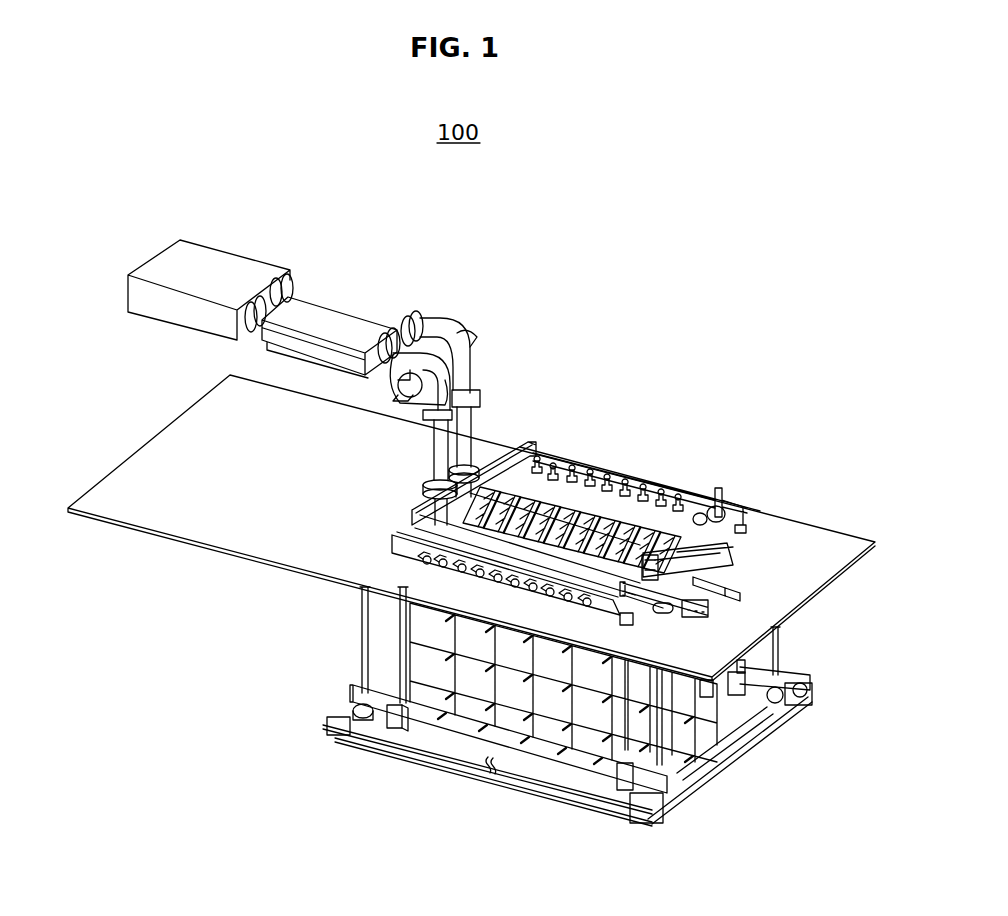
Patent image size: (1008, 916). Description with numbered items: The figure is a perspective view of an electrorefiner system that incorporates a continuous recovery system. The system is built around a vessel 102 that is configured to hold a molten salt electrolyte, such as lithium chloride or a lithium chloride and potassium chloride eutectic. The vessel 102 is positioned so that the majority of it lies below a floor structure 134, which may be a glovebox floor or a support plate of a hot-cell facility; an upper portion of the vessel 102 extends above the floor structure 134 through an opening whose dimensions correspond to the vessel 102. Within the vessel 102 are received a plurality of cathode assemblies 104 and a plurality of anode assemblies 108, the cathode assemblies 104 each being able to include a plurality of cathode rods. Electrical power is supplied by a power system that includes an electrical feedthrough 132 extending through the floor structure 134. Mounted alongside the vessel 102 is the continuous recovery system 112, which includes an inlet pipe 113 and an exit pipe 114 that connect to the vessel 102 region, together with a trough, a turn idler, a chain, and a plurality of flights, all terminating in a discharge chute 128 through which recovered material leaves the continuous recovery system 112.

The vessel 102 is at (442, 676).
The cathode assemblies 104 is at (593, 487).
The anode assemblies 108 is at (643, 510).
The continuous recovery system 112 is at (488, 343).
The inlet pipe 113 is at (462, 446).
The exit pipe 114 is at (435, 443).
The discharge chute 128 is at (303, 359).
The electrical feedthrough 132 is at (713, 617).
The floor structure 134 is at (807, 542).